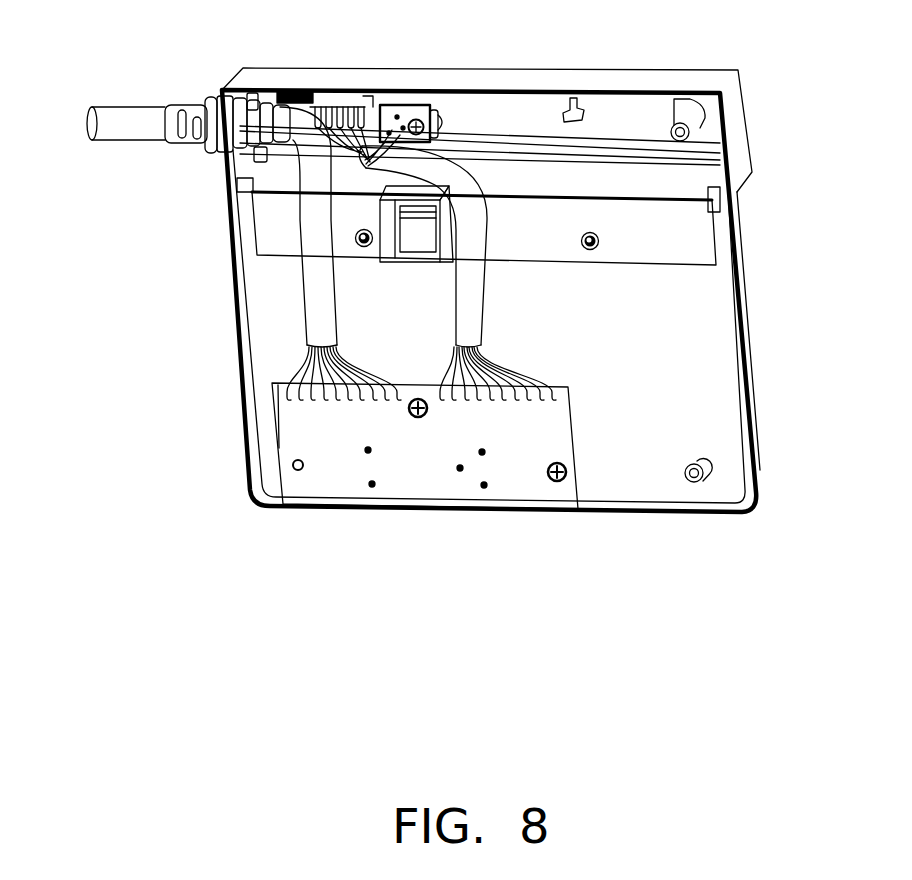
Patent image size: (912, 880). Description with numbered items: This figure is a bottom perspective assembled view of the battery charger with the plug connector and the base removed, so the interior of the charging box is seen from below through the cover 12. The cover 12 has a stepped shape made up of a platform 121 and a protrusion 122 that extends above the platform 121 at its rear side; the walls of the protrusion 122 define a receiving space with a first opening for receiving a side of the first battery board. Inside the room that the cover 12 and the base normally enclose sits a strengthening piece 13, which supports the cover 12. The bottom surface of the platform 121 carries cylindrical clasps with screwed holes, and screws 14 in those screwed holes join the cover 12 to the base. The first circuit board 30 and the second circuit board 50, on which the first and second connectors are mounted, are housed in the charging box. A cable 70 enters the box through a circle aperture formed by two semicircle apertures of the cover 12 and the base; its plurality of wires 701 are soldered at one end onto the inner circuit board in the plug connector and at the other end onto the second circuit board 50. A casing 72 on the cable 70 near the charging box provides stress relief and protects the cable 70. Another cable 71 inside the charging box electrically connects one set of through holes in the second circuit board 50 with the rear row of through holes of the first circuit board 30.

The cover 12 is at (480, 70).
The platform 121 is at (752, 402).
The protrusion 122 is at (740, 130).
The strengthening piece 13 is at (697, 225).
The screws 14 is at (435, 103).
The first circuit board 30 is at (415, 104).
The second circuit board 50 is at (422, 490).
The cable 70 is at (116, 133).
The wires 701 is at (288, 380).
The cable 71 is at (478, 242).
The casing 72 is at (173, 117).